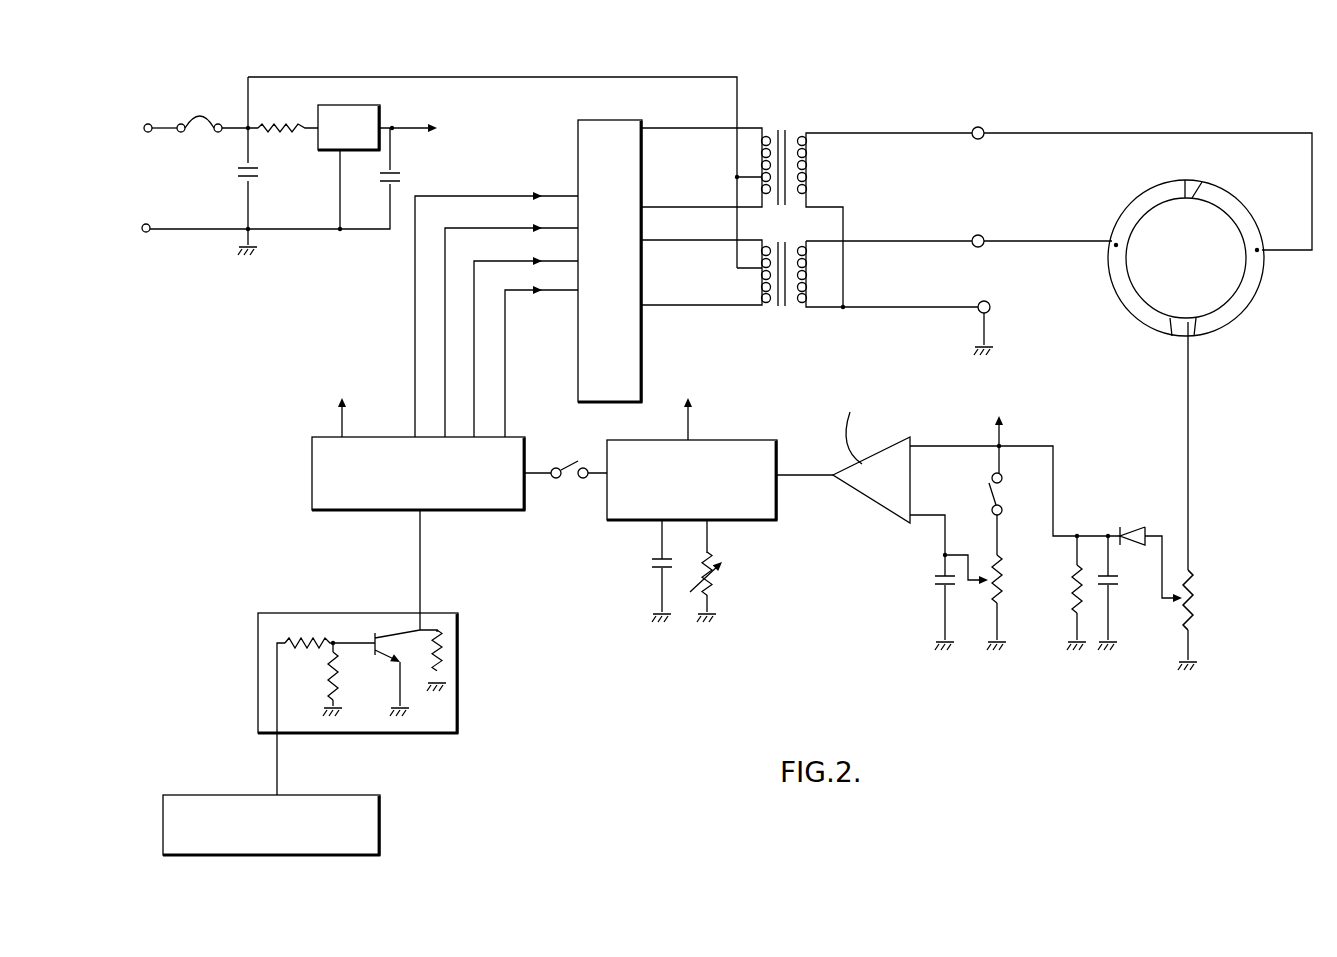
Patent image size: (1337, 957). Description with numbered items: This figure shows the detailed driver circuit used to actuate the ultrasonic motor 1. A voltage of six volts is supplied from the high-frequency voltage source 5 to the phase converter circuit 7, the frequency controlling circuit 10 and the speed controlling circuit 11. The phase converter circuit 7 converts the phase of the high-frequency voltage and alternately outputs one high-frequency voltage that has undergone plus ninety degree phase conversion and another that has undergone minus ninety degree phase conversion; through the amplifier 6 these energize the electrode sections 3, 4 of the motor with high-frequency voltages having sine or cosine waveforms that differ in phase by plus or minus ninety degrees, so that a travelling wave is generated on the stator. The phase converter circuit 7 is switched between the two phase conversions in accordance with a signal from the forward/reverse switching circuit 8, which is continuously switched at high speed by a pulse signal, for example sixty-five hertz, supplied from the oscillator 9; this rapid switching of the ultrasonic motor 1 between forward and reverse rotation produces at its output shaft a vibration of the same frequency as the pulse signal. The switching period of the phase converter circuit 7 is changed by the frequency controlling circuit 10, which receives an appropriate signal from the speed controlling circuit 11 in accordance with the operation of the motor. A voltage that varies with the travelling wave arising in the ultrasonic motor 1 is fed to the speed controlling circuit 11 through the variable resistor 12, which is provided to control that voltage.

The ultrasonic motor 1 is at (1250, 172).
The electrode section 3 is at (1240, 305).
The electrode section 4 is at (1128, 210).
The high-frequency voltage source 5 is at (241, 80).
The amplifier 6 is at (579, 112).
The phase converter circuit 7 is at (312, 477).
The forward/reverse switching circuit 8 is at (458, 716).
The oscillator 9 is at (380, 828).
The frequency controlling circuit 10 is at (620, 520).
The speed controlling circuit 11 is at (896, 534).
The variable resistor 12 is at (1168, 612).